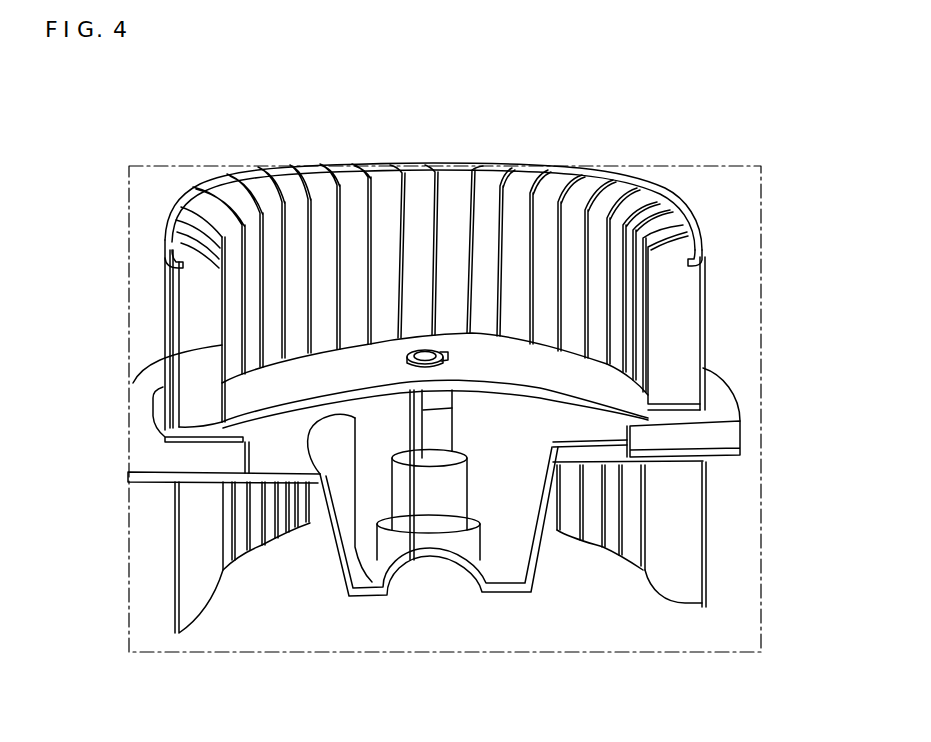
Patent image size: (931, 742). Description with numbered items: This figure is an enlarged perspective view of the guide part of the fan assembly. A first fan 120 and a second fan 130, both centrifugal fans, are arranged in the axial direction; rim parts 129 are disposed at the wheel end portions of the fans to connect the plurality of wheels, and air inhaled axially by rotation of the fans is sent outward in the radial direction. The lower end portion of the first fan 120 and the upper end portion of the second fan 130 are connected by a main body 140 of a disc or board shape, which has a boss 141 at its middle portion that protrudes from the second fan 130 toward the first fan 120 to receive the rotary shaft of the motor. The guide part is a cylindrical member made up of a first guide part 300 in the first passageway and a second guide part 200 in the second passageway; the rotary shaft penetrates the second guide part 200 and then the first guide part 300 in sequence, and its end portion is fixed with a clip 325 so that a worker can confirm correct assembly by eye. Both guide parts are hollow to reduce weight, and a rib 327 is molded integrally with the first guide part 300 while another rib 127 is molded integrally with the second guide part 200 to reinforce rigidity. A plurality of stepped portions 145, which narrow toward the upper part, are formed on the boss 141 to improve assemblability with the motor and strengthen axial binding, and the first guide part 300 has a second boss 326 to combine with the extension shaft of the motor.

The first fan 120 is at (444, 335).
The rim part 129 is at (700, 228).
The first guide part 300 is at (253, 403).
The clip 325 is at (420, 350).
The second boss 326 is at (443, 402).
The rib 327 is at (390, 408).
The boss 141 is at (443, 432).
The stepped portion 145 is at (463, 456).
The rib 127 is at (409, 506).
The second guide part 200 is at (334, 557).
The main body 140 is at (673, 432).
The second fan 130 is at (714, 545).